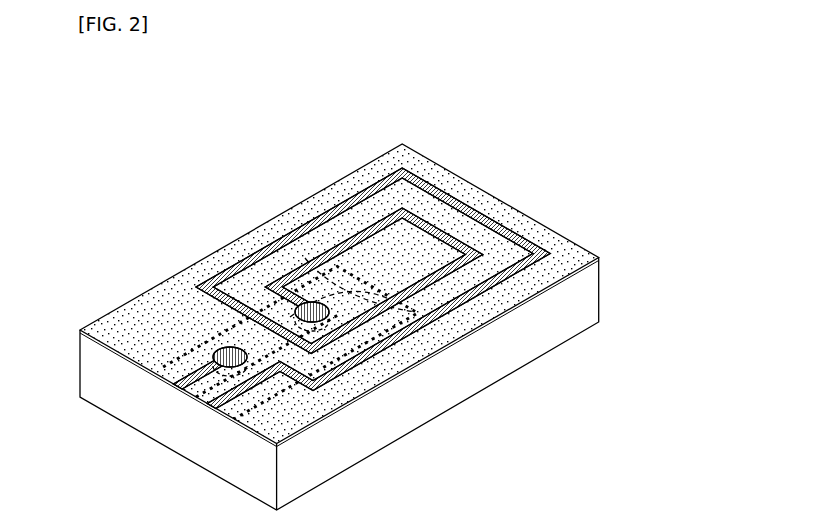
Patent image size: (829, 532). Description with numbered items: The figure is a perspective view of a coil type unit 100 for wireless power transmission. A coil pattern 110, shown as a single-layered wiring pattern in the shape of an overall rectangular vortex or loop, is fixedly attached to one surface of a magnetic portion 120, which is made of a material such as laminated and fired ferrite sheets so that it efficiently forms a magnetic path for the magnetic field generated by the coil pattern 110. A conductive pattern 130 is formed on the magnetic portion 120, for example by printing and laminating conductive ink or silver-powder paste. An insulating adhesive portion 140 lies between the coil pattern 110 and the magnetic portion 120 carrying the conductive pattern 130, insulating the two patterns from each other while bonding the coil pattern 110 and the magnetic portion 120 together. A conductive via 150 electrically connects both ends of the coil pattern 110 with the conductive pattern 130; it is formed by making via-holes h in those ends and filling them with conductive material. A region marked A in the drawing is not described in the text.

The coil type unit for wireless power transmission 100 is at (130, 78).
The coil pattern 110 is at (493, 210).
The magnetic portion 120 is at (548, 331).
The conductive pattern 130 is at (418, 318).
The insulating adhesive portion 140 is at (410, 160).
The conductive via 150 is at (312, 324).
The region A is at (305, 258).
The via-holes h is at (310, 302).